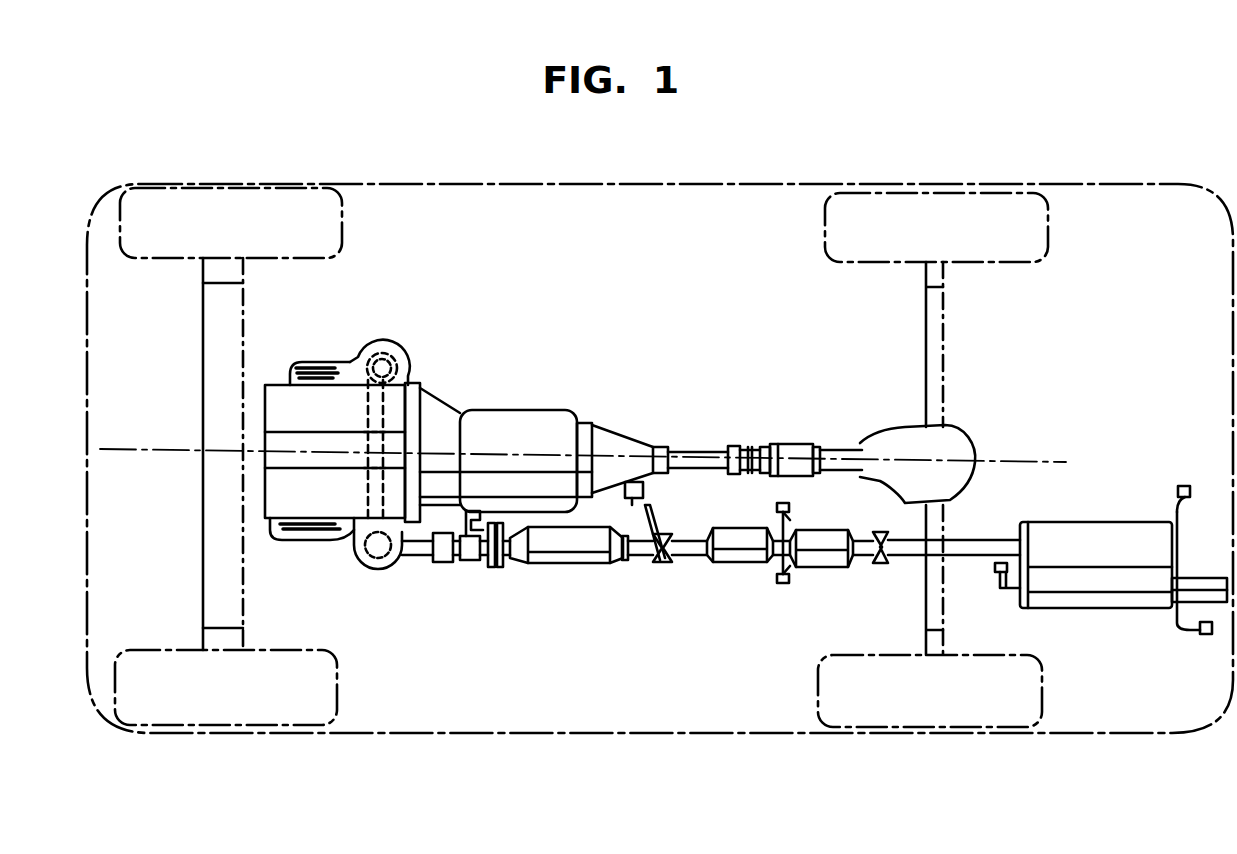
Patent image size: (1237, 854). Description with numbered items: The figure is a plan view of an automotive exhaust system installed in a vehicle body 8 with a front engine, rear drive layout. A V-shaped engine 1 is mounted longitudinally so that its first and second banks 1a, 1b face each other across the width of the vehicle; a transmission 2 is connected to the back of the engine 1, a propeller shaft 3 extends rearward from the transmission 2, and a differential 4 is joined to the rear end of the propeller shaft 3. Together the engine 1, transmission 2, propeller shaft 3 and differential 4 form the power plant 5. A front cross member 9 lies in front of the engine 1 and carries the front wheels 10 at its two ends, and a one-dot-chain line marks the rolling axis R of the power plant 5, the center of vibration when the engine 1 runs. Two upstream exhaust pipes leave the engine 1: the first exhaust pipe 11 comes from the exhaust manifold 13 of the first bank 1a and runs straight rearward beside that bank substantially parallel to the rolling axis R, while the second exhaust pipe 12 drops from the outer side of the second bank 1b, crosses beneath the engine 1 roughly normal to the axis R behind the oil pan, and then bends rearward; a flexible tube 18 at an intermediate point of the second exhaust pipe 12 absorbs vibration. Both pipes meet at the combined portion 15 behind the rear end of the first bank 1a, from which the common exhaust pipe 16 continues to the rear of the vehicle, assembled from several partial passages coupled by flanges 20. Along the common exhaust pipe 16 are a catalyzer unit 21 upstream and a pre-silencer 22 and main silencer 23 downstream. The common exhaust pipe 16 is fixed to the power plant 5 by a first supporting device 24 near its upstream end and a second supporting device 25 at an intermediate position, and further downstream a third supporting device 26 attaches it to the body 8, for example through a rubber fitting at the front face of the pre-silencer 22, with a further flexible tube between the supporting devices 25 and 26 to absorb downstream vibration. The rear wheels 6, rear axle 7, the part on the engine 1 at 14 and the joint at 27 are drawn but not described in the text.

The engine 1 is at (280, 385).
The first bank 1a is at (285, 540).
The second bank 1b is at (345, 385).
The transmission 2 is at (515, 410).
The propeller shaft 3 is at (840, 448).
The differential 4 is at (970, 446).
The power plant 5 is at (627, 436).
The rear wheel 6 is at (1022, 262).
The rear axle 7 is at (945, 358).
The body 8 is at (465, 184).
The front cross member 9 is at (198, 395).
The front wheels 10 is at (347, 236).
The first exhaust pipe 11 is at (410, 557).
The second exhaust pipe 12 is at (420, 398).
The exhaust manifold 13 is at (337, 542).
The intake manifold 14 is at (315, 365).
The combined portion 15 is at (443, 563).
The common exhaust pipe 16 is at (638, 557).
The flexible tube 18 is at (368, 445).
The flanges 20 is at (668, 535).
The catalyzer unit 21 is at (556, 565).
The pre-silencer 22 is at (845, 568).
The main silencer 23 is at (1105, 608).
The first supporting device 24 is at (483, 520).
The second supporting device 25 is at (656, 500).
The third supporting device 26 is at (788, 574).
The pre-muffler 27 is at (740, 565).
The rolling axis R is at (1064, 462).